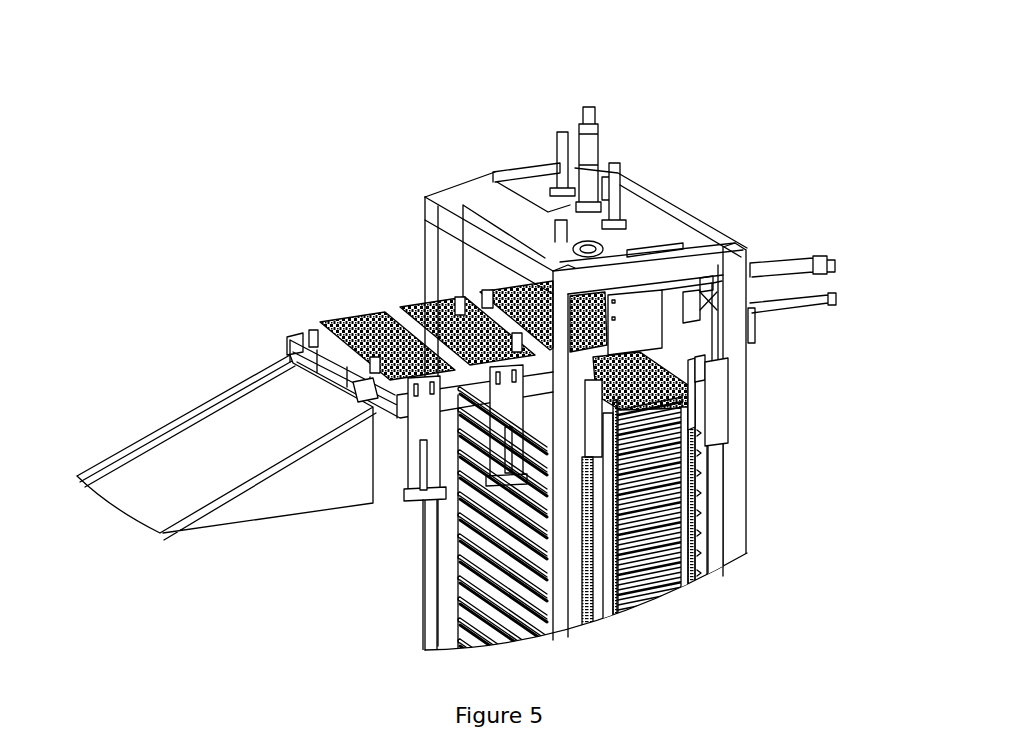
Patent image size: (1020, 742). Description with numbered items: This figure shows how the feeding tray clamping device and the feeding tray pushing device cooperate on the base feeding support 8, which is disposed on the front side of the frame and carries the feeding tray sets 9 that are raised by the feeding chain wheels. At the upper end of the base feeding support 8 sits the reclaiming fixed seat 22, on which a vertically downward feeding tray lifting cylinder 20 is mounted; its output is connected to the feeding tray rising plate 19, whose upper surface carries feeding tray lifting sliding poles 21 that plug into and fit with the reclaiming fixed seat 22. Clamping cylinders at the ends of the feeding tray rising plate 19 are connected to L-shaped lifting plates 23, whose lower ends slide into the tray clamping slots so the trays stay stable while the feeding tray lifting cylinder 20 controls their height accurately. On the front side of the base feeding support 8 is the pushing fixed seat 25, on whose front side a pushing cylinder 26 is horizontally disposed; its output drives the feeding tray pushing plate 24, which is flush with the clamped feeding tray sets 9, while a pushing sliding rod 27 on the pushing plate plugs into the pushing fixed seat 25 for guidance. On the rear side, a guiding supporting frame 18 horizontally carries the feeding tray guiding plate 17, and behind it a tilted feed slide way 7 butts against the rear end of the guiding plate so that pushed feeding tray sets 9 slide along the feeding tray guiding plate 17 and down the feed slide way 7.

The feed slide way 7 is at (267, 433).
The base feeding support 8 is at (733, 385).
The feeding tray sets 9 is at (420, 498).
The feeding tray guiding plate 17 is at (372, 403).
The guiding supporting frame 18 is at (422, 418).
The feeding tray rising plate 19 is at (563, 262).
The feeding tray lifting cylinder 20 is at (587, 150).
The feeding tray lifting sliding poles 21 is at (608, 195).
The reclaiming fixed seat 22 is at (627, 233).
The L-shaped lifting plates 23 is at (645, 308).
The feeding tray pushing plate 24 is at (700, 300).
The pushing fixed seat 25 is at (740, 250).
The pushing cylinder 26 is at (832, 300).
The pushing sliding rod 27 is at (770, 313).